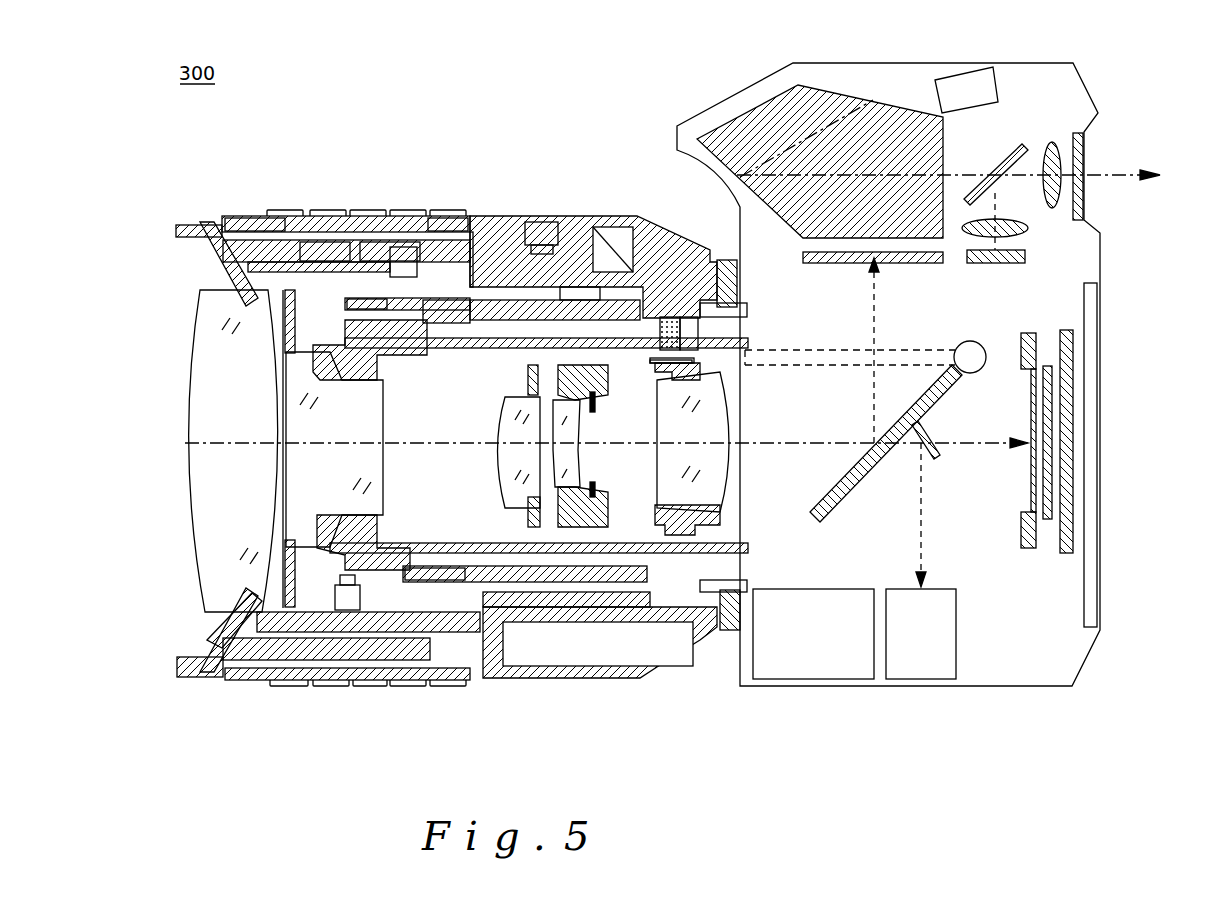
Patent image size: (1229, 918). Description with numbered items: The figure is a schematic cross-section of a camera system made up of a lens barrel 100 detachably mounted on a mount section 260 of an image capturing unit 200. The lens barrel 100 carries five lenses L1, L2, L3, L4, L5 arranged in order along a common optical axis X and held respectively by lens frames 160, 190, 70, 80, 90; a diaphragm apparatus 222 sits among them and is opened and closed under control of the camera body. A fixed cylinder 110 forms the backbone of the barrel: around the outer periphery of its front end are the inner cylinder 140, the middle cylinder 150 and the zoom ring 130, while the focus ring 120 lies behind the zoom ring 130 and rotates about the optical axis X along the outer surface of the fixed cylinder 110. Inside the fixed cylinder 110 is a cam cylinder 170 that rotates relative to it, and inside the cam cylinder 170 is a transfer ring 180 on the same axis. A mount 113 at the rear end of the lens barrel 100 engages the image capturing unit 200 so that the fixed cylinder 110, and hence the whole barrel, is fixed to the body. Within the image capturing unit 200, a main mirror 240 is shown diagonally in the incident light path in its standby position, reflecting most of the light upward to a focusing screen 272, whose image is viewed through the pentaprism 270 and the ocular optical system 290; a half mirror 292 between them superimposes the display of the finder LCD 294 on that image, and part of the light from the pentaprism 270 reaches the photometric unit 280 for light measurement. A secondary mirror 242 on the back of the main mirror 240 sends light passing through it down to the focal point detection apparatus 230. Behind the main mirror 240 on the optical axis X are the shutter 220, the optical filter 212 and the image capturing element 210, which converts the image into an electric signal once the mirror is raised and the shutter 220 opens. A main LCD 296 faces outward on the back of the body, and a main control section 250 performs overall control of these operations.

The lens barrel 100 is at (180, 705).
The image capturing unit 200 is at (1100, 705).
The inner cylinder 140 is at (275, 262).
The transfer ring 180 is at (316, 290).
The cam cylinder 170 is at (338, 336).
The middle cylinder 150 is at (368, 265).
The zoom ring 130 is at (440, 216).
The focus ring 120 is at (532, 222).
The fixed cylinder 110 is at (606, 227).
The mount section 260 is at (722, 262).
The mount 113 is at (692, 610).
The lens frame 190 is at (376, 380).
The lens frame 160 is at (216, 617).
The lens frame 70 is at (500, 388).
The lens frame 80 is at (568, 410).
The lens frame 90 is at (676, 390).
The diaphragm apparatus 222 is at (596, 400).
The first lens L1 is at (205, 455).
The second lens L2 is at (383, 458).
The third lens L3 is at (498, 455).
The fourth lens L4 is at (572, 470).
The fifth lens L5 is at (660, 462).
The pentaprism 270 is at (757, 107).
The photometric unit 280 is at (950, 88).
The focusing screen 272 is at (805, 263).
The half mirror 292 is at (1018, 150).
The ocular optical system 290 is at (1088, 200).
The finder LCD 294 is at (1028, 258).
The main LCD 296 is at (1100, 395).
The image capturing element 210 is at (1070, 455).
The optical filter 212 is at (1054, 483).
The shutter 220 is at (1037, 520).
The main mirror 240 is at (826, 512).
The secondary mirror 242 is at (936, 456).
The main control section 250 is at (816, 589).
The focal point detection apparatus 230 is at (944, 589).
The optical axis X is at (778, 441).